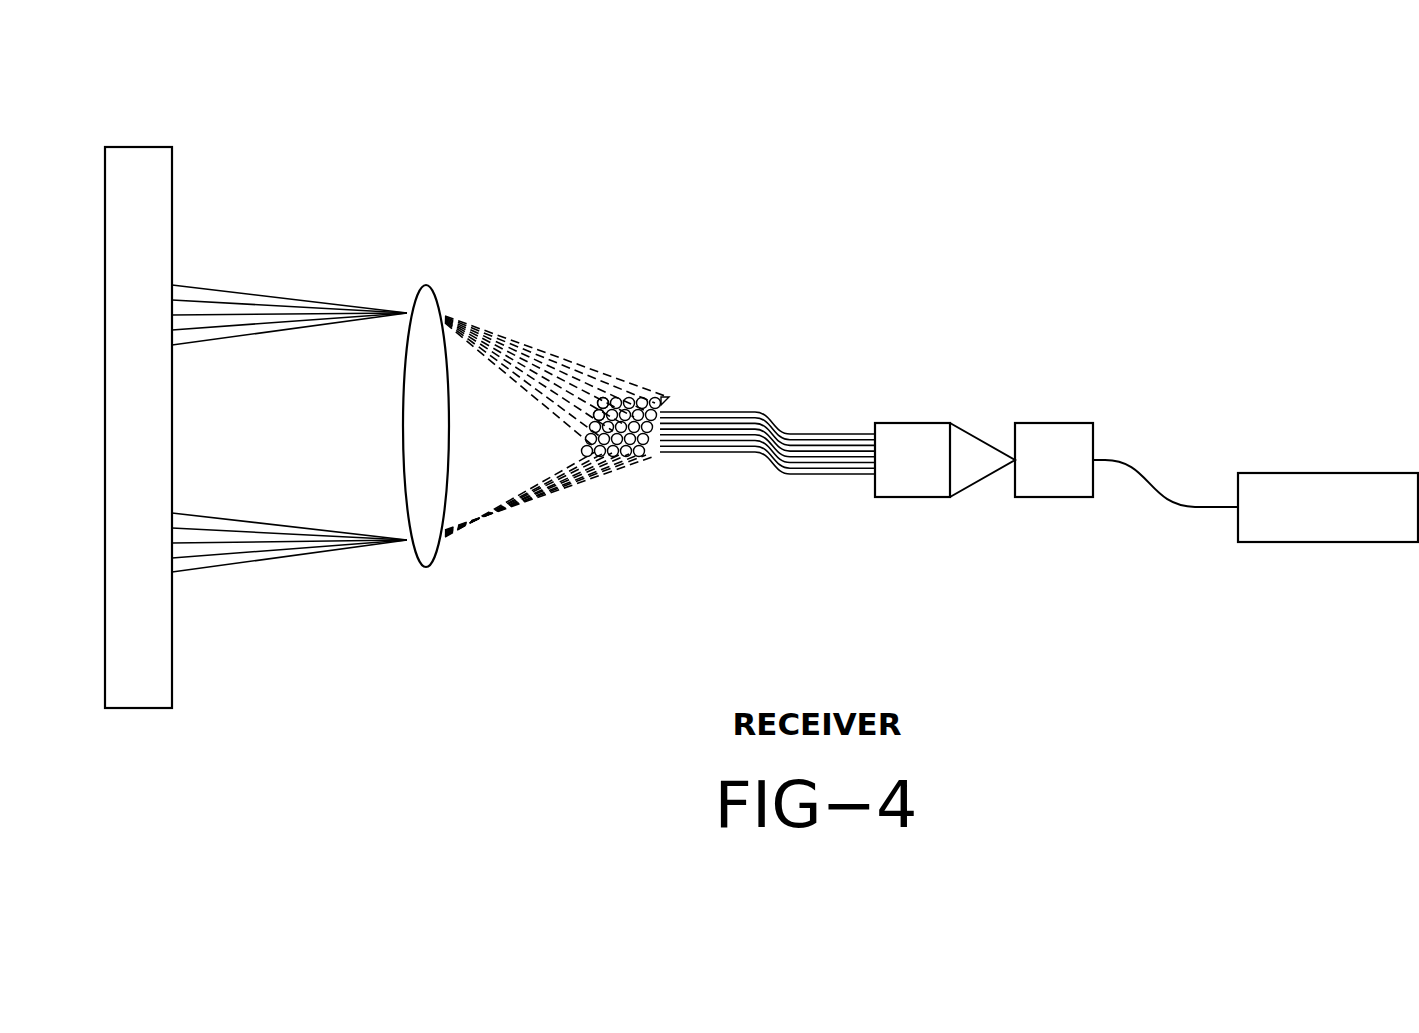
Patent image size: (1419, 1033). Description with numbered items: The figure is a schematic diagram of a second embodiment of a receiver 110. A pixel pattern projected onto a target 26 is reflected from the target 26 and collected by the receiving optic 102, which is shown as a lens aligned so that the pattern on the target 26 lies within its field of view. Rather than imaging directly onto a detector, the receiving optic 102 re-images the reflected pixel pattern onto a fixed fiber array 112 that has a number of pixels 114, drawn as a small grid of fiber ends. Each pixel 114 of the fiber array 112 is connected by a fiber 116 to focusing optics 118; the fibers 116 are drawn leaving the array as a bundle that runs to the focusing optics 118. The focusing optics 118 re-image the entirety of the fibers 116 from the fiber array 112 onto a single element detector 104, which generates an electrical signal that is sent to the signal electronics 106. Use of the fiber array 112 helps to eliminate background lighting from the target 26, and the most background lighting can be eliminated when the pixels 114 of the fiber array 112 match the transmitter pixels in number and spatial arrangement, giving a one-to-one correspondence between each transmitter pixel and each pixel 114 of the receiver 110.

The target 26 is at (158, 444).
The receiver optic 102 is at (456, 289).
The single element detector 104 is at (1028, 480).
The signal electronics 106 is at (1300, 519).
The receiver 110 is at (1037, 200).
The fiber array 112 is at (663, 381).
The pixels 114 is at (626, 396).
The fiber 116 is at (750, 452).
The focusing optics 118 is at (937, 480).